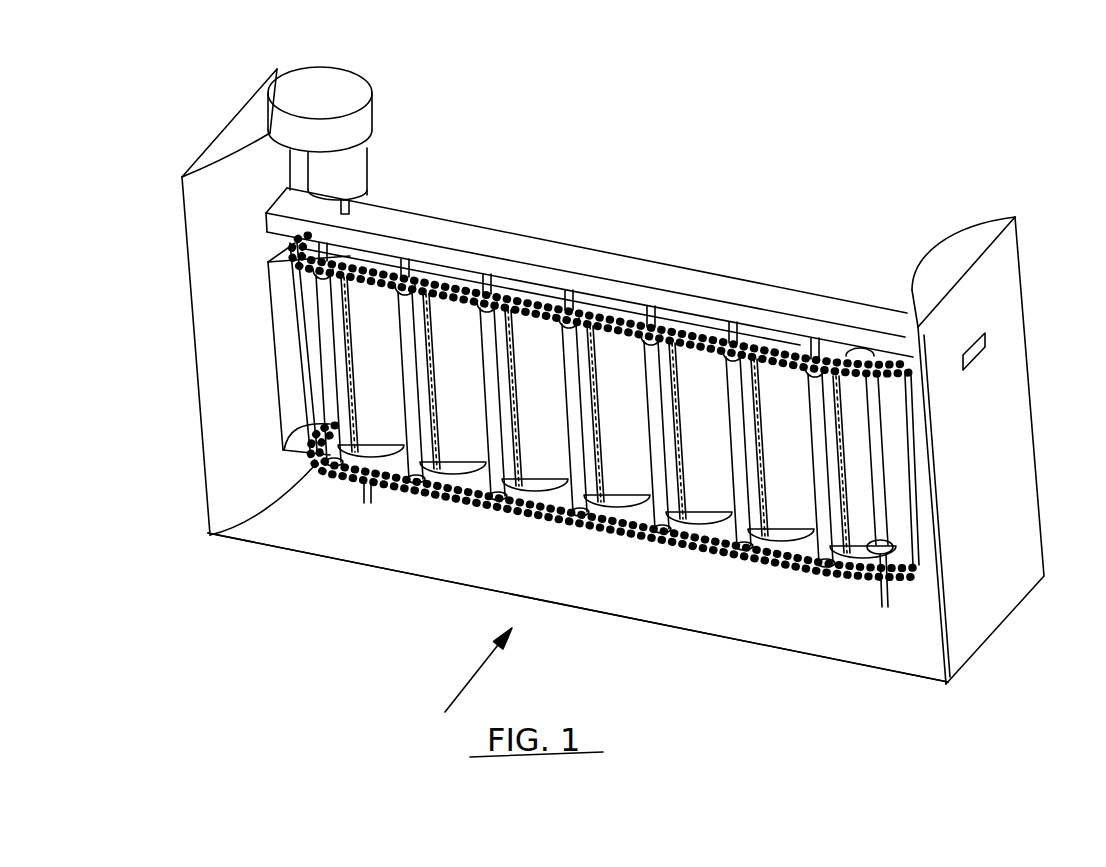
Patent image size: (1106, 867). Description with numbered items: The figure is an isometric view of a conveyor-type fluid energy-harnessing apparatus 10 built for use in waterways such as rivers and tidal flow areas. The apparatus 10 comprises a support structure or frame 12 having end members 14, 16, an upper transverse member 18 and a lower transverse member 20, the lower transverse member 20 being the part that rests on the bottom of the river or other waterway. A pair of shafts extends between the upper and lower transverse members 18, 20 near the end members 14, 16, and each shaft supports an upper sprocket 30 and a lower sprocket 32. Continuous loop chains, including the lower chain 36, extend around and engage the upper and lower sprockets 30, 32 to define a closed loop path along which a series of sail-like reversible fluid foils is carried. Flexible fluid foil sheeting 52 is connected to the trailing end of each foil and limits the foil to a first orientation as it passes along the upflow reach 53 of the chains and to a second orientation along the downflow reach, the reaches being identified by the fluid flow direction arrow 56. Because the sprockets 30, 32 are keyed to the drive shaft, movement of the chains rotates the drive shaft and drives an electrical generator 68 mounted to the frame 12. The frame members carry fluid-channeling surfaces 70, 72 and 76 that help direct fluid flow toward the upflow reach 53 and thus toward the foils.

The conveyor-type fluid energy-harnessing apparatus 10 is at (552, 154).
The frame 12 is at (1032, 282).
The end member 14 is at (1014, 419).
The end member 16 is at (188, 293).
The upper transverse member 18 is at (710, 282).
The lower transverse member 20 is at (717, 638).
The upper sprocket 30 is at (833, 352).
The lower sprocket 32 is at (852, 553).
The lower chain 36 is at (528, 520).
The flexible fluid foil sheeting 52 is at (480, 287).
The upflow reach 53 is at (625, 552).
The flow direction arrow 56 is at (445, 712).
The electrical generator 68 is at (335, 68).
The fluid-channeling surface 70 is at (943, 242).
The fluid-channeling surface 72 is at (260, 163).
The fluid-channeling surface 76 is at (377, 540).